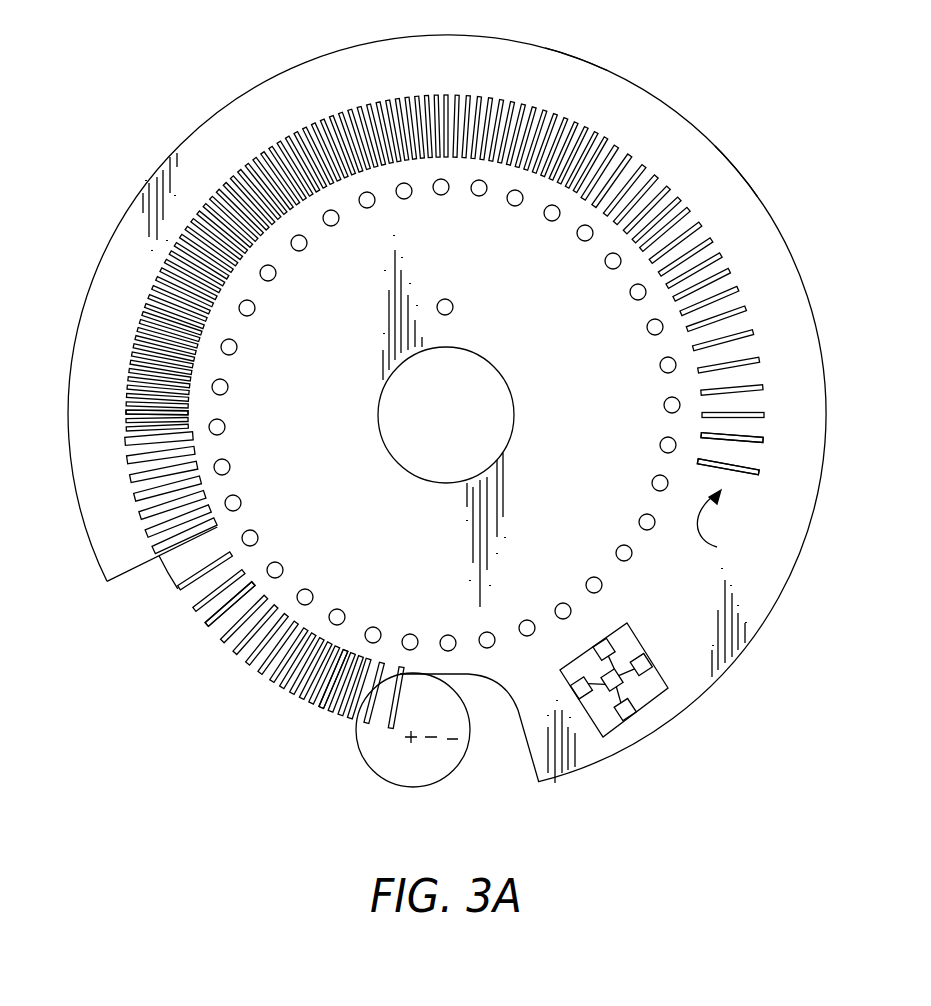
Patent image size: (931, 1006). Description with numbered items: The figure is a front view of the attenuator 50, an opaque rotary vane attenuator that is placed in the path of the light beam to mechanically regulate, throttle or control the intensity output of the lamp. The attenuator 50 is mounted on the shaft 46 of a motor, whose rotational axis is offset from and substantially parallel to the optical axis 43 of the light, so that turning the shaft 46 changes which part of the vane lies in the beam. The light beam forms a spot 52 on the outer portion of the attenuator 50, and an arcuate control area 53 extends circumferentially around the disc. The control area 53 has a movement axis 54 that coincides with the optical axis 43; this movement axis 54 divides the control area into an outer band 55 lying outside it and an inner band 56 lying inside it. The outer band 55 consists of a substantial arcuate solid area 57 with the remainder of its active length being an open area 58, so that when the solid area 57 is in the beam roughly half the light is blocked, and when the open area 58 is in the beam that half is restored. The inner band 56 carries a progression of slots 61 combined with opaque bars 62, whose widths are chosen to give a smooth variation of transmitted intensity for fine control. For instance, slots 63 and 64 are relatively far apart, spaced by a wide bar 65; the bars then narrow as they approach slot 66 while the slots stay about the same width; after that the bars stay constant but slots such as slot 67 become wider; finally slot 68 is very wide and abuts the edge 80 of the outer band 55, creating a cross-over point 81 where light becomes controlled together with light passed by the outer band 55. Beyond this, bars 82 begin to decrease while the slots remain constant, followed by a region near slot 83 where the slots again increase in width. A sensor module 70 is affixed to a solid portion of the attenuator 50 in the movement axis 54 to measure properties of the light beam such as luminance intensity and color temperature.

The optical axis 43 is at (411, 740).
The shaft 46 is at (446, 417).
The attenuator 50 is at (683, 117).
The spot 52 is at (463, 760).
The arcuate control area 53 is at (738, 193).
The movement axis 54 is at (428, 743).
The outer band 55 is at (567, 78).
The inner band 56 is at (725, 526).
The solid area 57 is at (106, 389).
The open area 58 is at (172, 659).
The slots 61 is at (760, 358).
The opaque bars 62 is at (750, 375).
The slot 63 is at (757, 472).
The slot 64 is at (760, 437).
The wide bar 65 is at (750, 457).
The slot 66 is at (610, 153).
The slot 67 is at (130, 451).
The slot 68 is at (165, 537).
The sensor module 70 is at (650, 678).
The edge 80 is at (103, 578).
The cross-over point 81 is at (157, 558).
The bars 82 is at (213, 647).
The slot 83 is at (317, 713).